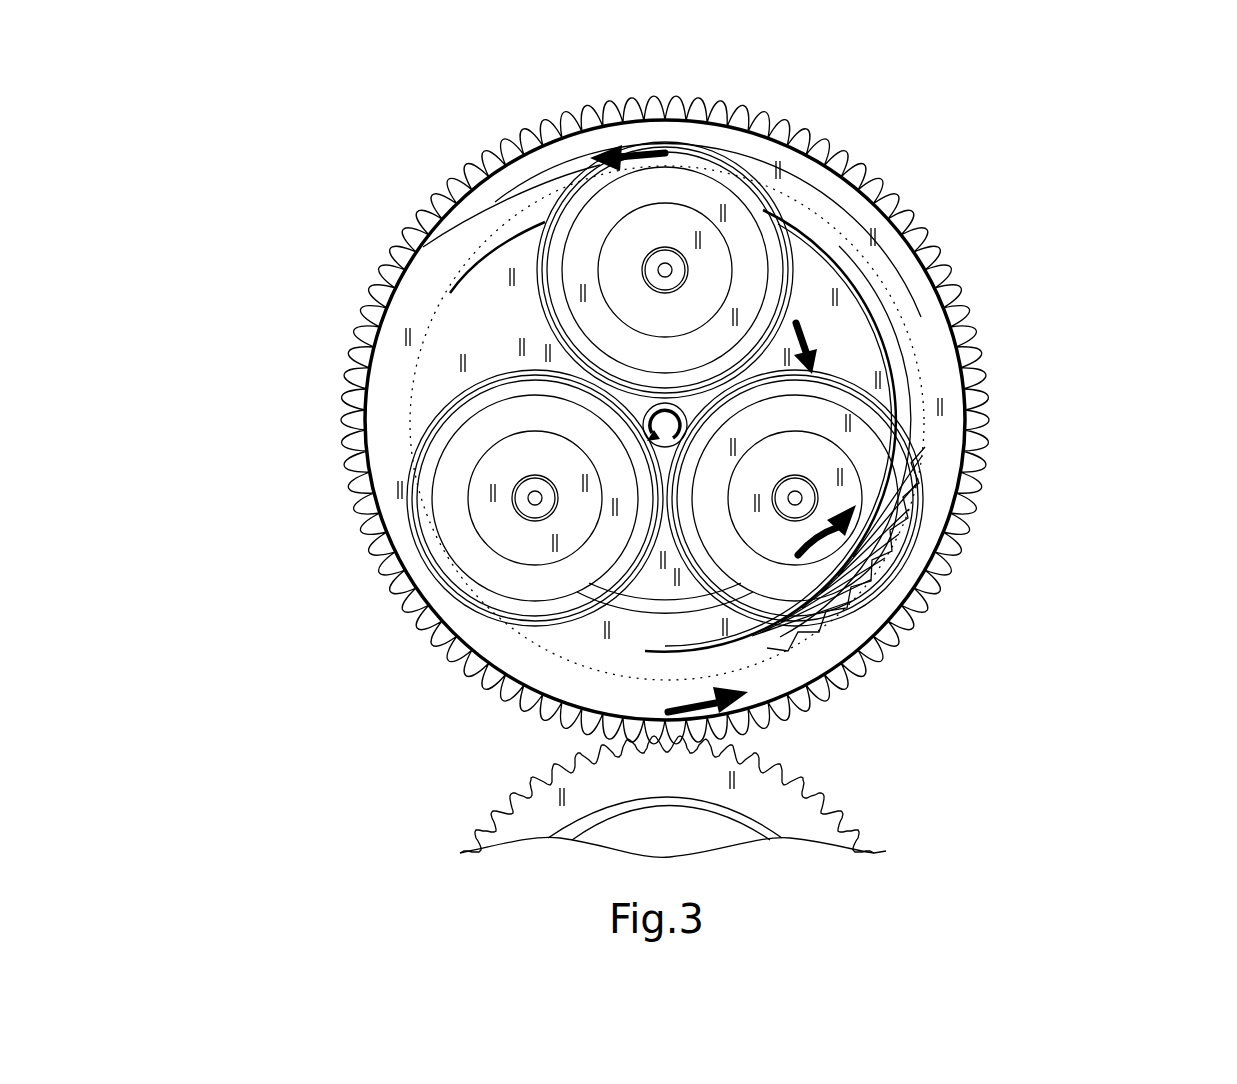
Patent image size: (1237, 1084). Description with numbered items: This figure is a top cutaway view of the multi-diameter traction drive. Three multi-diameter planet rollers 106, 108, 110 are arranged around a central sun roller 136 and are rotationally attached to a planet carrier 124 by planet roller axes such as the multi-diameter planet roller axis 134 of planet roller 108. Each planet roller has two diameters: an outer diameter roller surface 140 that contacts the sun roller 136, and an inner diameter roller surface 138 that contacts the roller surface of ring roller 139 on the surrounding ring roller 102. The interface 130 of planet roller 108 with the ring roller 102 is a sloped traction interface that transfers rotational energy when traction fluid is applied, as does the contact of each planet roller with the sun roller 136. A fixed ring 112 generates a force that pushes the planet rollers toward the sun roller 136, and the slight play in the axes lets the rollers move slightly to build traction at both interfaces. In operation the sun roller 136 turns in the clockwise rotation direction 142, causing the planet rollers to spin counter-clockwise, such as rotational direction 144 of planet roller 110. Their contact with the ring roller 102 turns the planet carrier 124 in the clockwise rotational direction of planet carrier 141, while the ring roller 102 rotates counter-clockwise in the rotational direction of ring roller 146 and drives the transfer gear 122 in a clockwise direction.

The ring roller 102 is at (383, 444).
The multi-diameter planet roller 106 is at (505, 576).
The multi-diameter planet roller 108 is at (662, 262).
The multi-diameter planet roller 110 is at (877, 447).
The fixed ring 112 is at (630, 640).
The transfer gear 122 is at (773, 798).
The planet carrier 124 is at (800, 318).
The interface 130 is at (770, 148).
The multi-diameter planet roller axis 134 is at (505, 241).
The sun roller 136 is at (660, 424).
The inner diameter roller surface 138 is at (785, 212).
The roller surface of ring roller 139 is at (470, 293).
The outer diameter roller surface 140 is at (797, 272).
The rotational direction of planet carrier 141 is at (805, 315).
The rotation direction 142 is at (688, 428).
The rotational direction 144 is at (820, 553).
The rotational direction of ring roller 146 is at (765, 750).